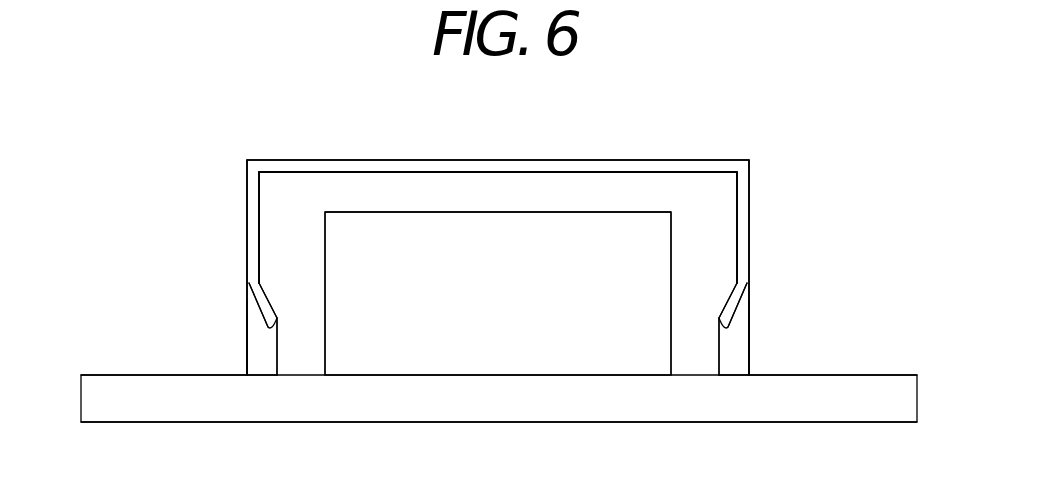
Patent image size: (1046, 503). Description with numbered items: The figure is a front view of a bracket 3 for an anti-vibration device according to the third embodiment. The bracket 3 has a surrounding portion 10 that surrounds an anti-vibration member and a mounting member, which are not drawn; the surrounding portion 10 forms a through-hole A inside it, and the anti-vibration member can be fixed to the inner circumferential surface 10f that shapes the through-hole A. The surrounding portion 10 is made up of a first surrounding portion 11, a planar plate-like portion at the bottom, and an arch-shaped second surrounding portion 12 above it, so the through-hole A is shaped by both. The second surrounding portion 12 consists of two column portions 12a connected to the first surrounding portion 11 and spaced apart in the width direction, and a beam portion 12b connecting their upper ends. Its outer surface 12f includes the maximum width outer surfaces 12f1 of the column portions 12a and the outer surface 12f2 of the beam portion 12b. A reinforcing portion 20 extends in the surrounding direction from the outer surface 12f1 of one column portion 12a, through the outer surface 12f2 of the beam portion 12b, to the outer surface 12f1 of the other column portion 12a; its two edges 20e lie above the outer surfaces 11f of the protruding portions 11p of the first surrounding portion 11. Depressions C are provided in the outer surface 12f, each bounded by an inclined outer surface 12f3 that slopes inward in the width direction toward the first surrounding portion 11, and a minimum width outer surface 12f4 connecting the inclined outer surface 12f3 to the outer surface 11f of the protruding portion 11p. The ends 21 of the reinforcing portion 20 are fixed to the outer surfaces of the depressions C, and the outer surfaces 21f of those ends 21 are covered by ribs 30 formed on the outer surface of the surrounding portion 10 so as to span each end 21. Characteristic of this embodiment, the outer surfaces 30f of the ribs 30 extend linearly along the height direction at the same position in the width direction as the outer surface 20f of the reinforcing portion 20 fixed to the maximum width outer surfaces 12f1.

The bracket for an anti-vibration device 3 is at (233, 113).
The reinforcing portion 20 is at (553, 160).
The outer surface of the reinforcing portion 20f is at (247, 177).
The edge of the reinforcing portion 20e is at (268, 331).
The second surrounding portion 12 is at (446, 194).
The beam portion 12b is at (512, 188).
The column portion 12a is at (285, 232).
The outer surface of the second surrounding portion 12f is at (645, 172).
The maximum width outer surface of the column portion 12f1 is at (259, 222).
The outer surface of the beam portion 12f2 is at (499, 131).
The inclined outer surface of the column portion 12f3 is at (263, 301).
The minimum width outer surface of the column portion 12f4 is at (272, 363).
The end of the reinforcing portion 21 is at (272, 307).
The outer surface of the end of the reinforcing portion 21f is at (254, 297).
The rib 30 is at (246, 340).
The outer surface of the rib 30f is at (246, 352).
The depression C is at (270, 348).
The surrounding portion 10 is at (542, 422).
The inner circumferential surface of the surrounding portion 10f is at (326, 250).
The through-hole A is at (513, 327).
The first surrounding portion 11 is at (461, 393).
The outer surface of the protruding portion 11f is at (130, 375).
The protruding portion 11p is at (135, 400).